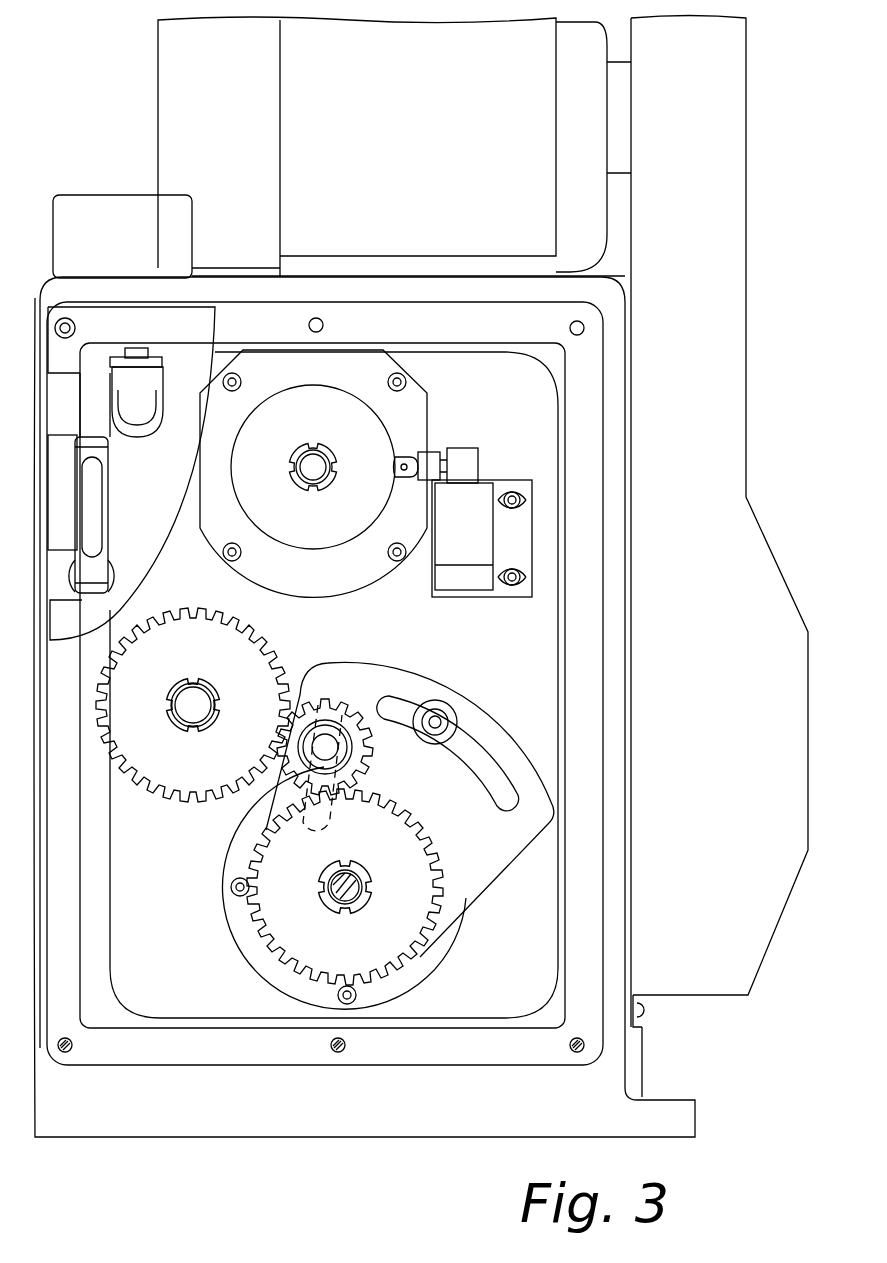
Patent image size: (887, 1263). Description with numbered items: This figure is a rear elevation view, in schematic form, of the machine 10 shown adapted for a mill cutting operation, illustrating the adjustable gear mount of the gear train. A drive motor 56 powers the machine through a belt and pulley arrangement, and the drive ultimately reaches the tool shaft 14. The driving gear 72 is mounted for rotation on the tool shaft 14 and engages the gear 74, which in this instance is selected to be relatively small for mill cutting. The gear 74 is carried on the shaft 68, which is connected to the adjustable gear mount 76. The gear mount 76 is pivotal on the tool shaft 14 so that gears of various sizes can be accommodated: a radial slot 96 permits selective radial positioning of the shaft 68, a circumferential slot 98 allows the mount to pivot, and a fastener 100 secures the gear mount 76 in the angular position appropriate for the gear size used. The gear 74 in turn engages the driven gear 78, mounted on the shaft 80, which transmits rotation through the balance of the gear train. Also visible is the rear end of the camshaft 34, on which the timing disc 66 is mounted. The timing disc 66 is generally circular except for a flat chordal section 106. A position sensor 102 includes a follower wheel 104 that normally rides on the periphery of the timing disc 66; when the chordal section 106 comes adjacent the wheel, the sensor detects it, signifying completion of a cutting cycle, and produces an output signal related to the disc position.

The machine 10 is at (650, 444).
The tool shaft 14 is at (352, 887).
The camshaft 34 is at (320, 474).
The drive motor 56 is at (446, 240).
The timing disc 66 is at (296, 540).
The shaft 68 is at (327, 747).
The driving gear 72 is at (397, 942).
The gear 74 is at (350, 773).
The adjustable gear mount 76 is at (486, 870).
The driven gear 78 is at (165, 785).
The shaft 80 is at (197, 700).
The radial slot 96 is at (327, 693).
The circumferential slot 98 is at (490, 747).
The fastener 100 is at (447, 706).
The position sensor 102 is at (522, 472).
The follower wheel 104 is at (408, 456).
The flat chordal section 106 is at (398, 450).